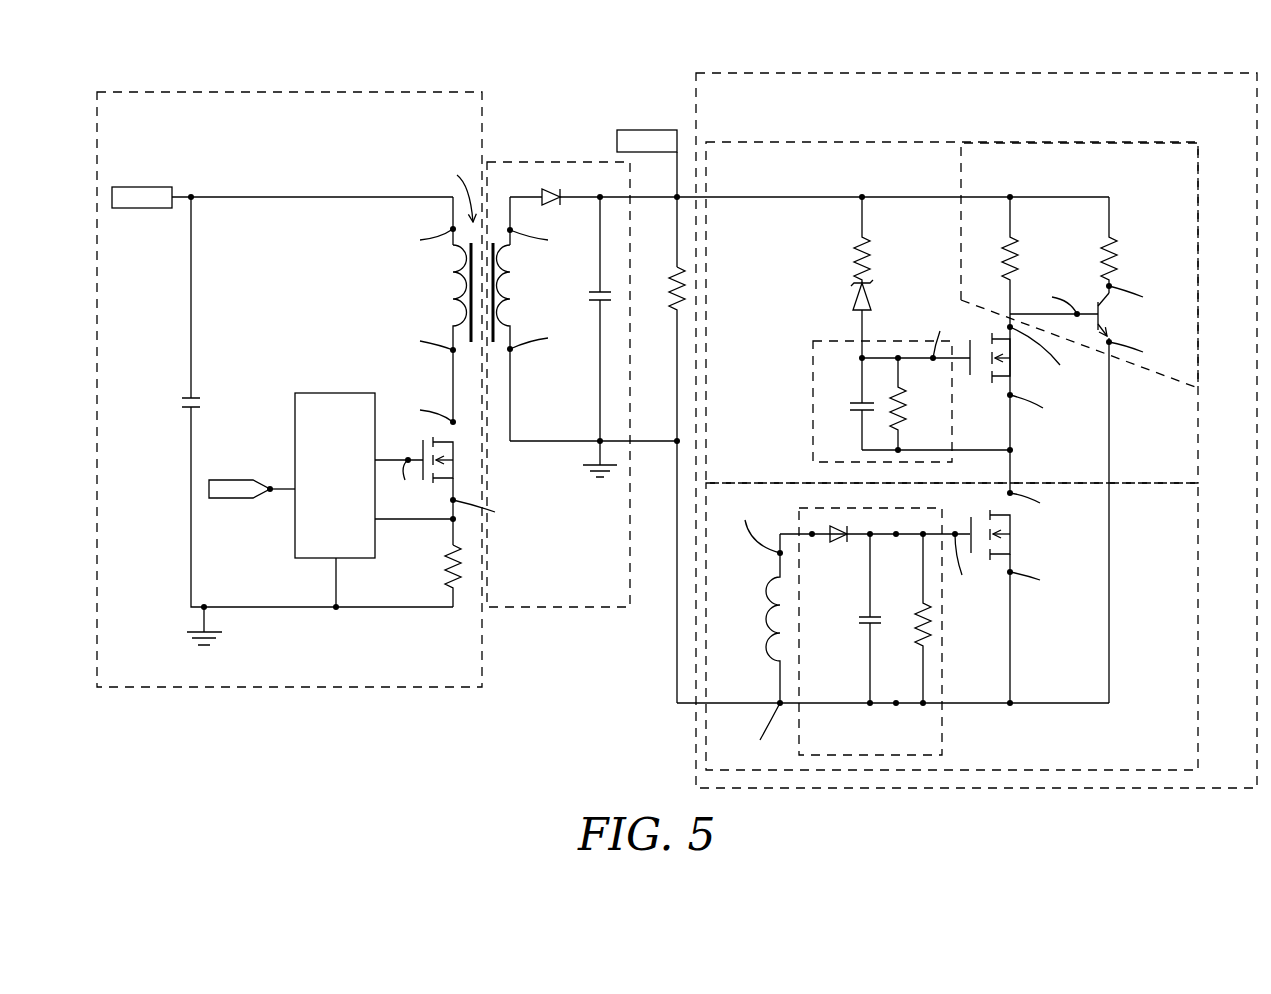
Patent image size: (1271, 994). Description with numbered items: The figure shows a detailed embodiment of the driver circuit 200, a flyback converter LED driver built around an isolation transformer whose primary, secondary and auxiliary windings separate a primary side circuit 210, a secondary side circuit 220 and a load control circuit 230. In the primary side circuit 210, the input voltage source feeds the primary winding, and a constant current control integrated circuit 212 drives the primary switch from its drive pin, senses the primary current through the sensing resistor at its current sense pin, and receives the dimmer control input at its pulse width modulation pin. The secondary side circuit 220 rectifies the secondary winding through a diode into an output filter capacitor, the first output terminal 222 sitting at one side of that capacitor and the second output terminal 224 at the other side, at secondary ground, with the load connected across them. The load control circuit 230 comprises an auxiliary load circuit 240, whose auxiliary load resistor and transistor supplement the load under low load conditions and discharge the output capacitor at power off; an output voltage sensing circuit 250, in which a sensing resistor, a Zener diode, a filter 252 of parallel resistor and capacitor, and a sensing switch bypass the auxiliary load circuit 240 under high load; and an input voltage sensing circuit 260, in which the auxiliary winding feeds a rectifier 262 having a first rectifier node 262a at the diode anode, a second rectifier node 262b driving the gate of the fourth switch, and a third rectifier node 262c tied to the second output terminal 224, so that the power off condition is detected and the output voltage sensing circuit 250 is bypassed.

The driver circuit 200 is at (665, 62).
The primary side circuit 210 is at (210, 92).
The constant current control integrated circuit 212 is at (338, 393).
The secondary side circuit 220 is at (503, 160).
The first output terminal 222 is at (600, 197).
The second output terminal 224 is at (600, 441).
The load control circuit 230 is at (1090, 73).
The auxiliary load circuit 240 is at (1080, 143).
The output voltage sensing circuit 250 is at (905, 142).
The filter 252 is at (810, 360).
The input voltage sensing circuit 260 is at (1200, 575).
The rectifier 262 is at (945, 734).
The first rectifier node 262a is at (812, 534).
The second rectifier node 262b is at (896, 534).
The third rectifier node 262c is at (896, 703).